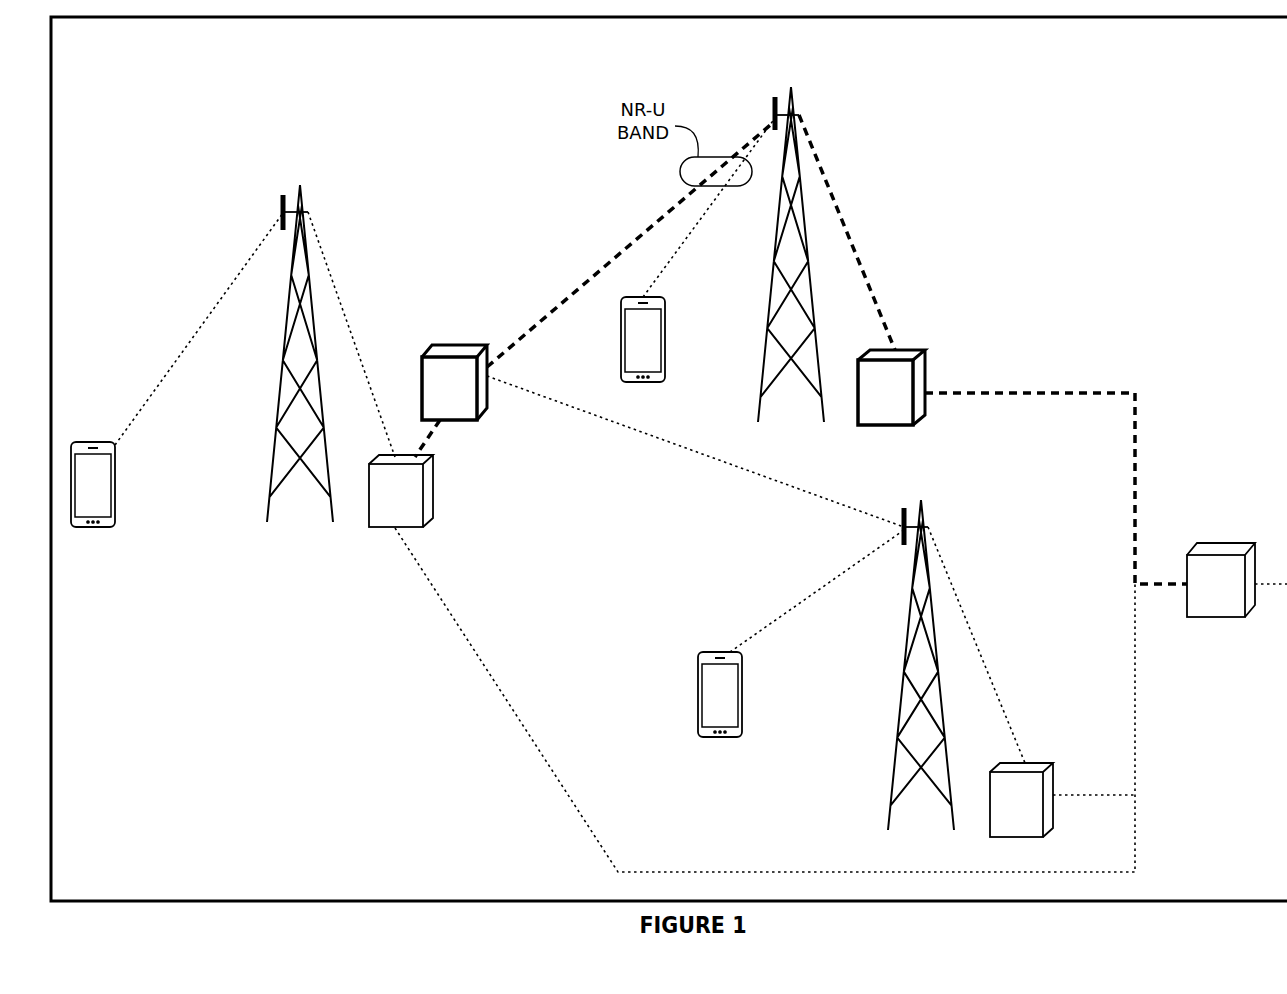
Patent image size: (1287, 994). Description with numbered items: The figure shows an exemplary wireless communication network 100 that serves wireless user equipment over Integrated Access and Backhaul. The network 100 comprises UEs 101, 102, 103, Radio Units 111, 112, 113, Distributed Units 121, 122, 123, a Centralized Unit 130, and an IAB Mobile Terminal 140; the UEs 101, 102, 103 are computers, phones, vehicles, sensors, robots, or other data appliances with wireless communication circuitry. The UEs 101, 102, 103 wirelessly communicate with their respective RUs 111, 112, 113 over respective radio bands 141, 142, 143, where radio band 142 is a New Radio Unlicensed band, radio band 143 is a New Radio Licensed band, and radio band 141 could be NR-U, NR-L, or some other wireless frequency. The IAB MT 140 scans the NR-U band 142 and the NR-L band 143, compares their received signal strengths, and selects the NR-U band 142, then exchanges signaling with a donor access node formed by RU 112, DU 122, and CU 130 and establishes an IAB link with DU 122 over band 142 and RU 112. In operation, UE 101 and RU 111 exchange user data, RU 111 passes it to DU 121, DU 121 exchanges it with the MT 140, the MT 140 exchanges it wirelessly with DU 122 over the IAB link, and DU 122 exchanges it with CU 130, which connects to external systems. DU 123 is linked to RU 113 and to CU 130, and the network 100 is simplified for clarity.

The wireless communication network 100 is at (883, 49).
The User Equipment (UE) 101 is at (93, 484).
The User Equipment (UE) 102 is at (643, 339).
The User Equipment (UE) 103 is at (720, 694).
The Radio Unit (RU) 111 is at (284, 193).
The Radio Unit (RU) 112 is at (776, 95).
The Radio Unit (RU) 113 is at (904, 508).
The Distributed Unit (DU) 121 is at (401, 491).
The Distributed Unit (DU) 122 is at (891, 387).
The Distributed Unit (DU) 123 is at (1021, 800).
The Centralized Unit (CU) 130 is at (1221, 580).
The IAB Mobile Terminal (MT) 140 is at (454, 382).
The radio band 141 is at (158, 392).
The NR-U frequency band 142 is at (590, 283).
The NR-L frequency band 143 is at (720, 463).